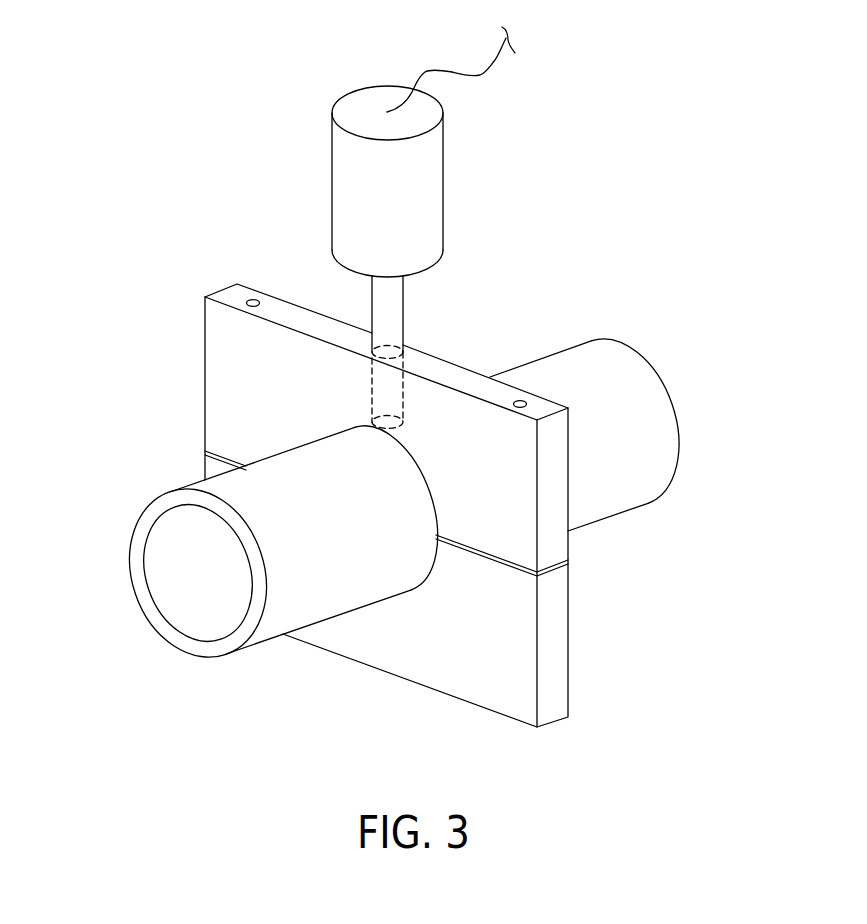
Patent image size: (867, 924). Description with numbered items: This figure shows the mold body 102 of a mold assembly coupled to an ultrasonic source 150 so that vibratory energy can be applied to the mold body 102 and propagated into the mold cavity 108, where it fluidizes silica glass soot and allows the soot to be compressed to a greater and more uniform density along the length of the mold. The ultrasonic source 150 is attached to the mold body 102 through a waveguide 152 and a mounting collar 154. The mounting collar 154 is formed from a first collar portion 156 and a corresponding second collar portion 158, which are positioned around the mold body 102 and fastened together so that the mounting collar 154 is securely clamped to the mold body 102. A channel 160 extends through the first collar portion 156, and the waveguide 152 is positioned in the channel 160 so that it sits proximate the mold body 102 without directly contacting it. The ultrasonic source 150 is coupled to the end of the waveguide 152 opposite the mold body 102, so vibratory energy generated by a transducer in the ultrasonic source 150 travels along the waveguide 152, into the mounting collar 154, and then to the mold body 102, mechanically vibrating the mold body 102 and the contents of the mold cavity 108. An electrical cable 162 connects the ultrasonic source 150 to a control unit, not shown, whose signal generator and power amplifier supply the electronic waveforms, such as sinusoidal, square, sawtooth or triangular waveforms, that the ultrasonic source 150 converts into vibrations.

The mold body 102 is at (562, 349).
The mold cavity 108 is at (168, 575).
The ultrasonic source 150 is at (445, 182).
The waveguide 152 is at (403, 303).
The mounting collar 154 is at (213, 283).
The first collar portion 156 is at (570, 462).
The second collar portion 158 is at (570, 618).
The channel 160 is at (372, 388).
The electrical cable 162 is at (435, 70).